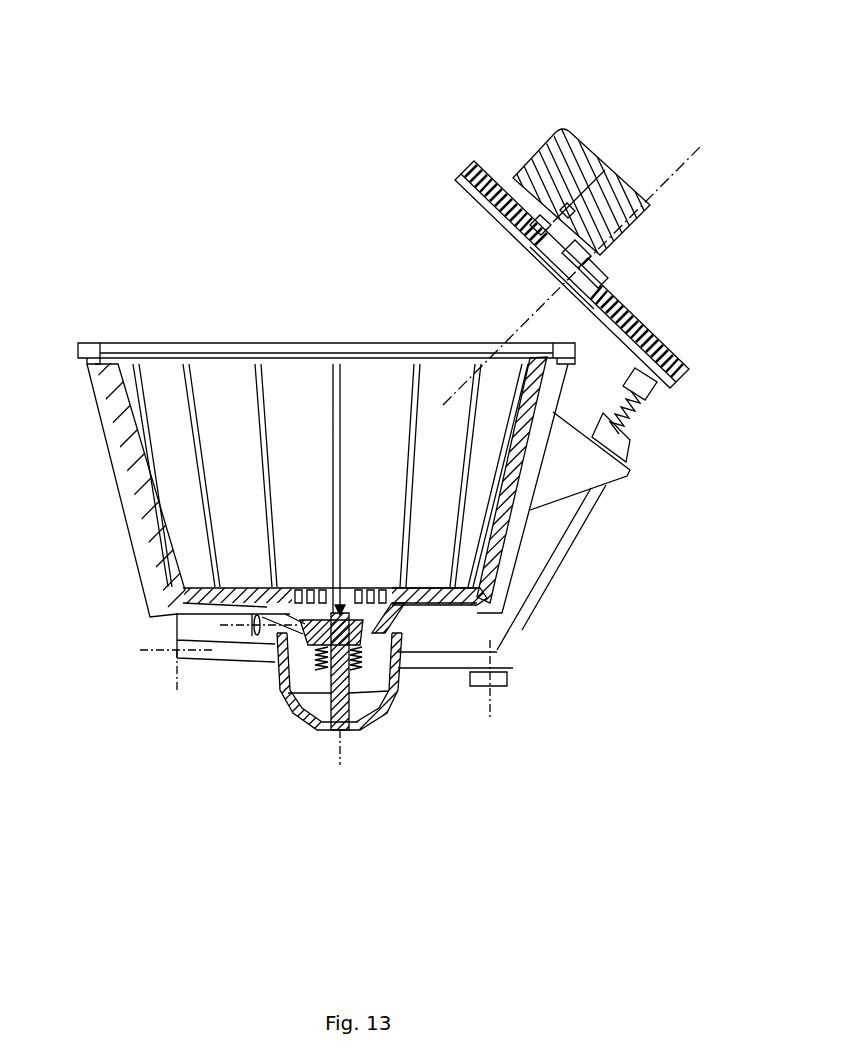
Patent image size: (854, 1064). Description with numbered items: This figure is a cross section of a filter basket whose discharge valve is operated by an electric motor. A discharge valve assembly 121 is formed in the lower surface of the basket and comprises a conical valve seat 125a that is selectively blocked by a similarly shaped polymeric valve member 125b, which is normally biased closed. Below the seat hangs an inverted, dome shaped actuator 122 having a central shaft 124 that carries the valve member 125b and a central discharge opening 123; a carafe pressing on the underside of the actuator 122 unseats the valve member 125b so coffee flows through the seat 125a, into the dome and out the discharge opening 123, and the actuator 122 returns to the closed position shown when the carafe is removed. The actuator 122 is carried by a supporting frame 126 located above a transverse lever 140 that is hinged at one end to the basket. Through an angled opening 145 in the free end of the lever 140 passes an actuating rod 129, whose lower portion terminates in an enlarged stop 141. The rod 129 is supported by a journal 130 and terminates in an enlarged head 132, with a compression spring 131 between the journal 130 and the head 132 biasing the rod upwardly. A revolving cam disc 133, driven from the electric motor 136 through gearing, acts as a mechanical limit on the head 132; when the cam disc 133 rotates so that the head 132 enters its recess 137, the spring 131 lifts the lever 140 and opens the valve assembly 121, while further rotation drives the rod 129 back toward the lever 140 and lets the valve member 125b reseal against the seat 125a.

The discharge valve assembly 121 is at (365, 778).
The dome shaped actuator 122 is at (390, 712).
The discharge opening 123 is at (347, 730).
The central shaft 124 is at (318, 698).
The conical valve seat 125a is at (400, 629).
The valve member 125b is at (307, 647).
The supporting frame 126 is at (225, 650).
The actuating rod 129 is at (566, 537).
The journal 130 is at (630, 465).
The compression spring 131 is at (644, 422).
The enlarged head 132 is at (654, 394).
The cam disc 133 is at (485, 208).
The electric motor 136 is at (567, 127).
The recess 137 is at (673, 395).
The transverse lever 140 is at (447, 657).
The enlarged stop 141 is at (508, 680).
The opening 145 is at (637, 636).